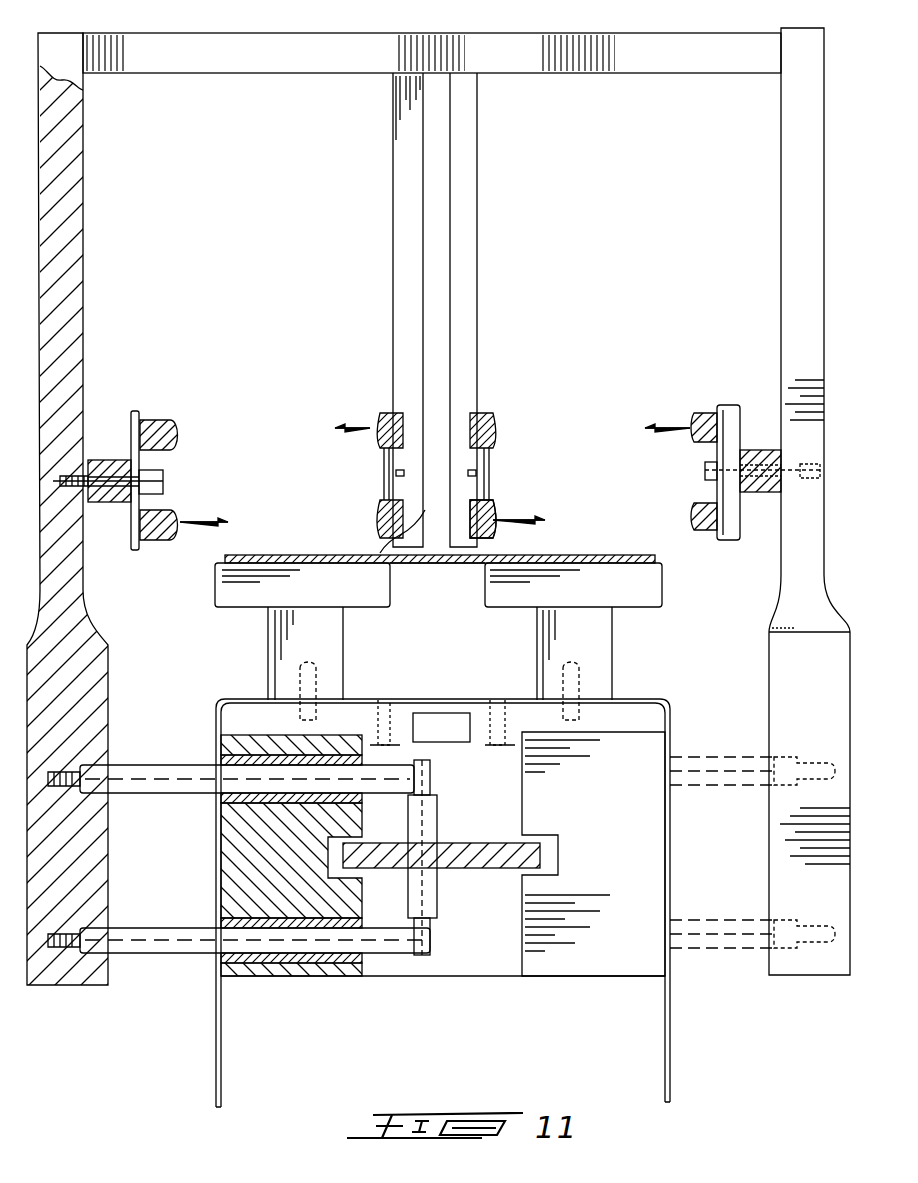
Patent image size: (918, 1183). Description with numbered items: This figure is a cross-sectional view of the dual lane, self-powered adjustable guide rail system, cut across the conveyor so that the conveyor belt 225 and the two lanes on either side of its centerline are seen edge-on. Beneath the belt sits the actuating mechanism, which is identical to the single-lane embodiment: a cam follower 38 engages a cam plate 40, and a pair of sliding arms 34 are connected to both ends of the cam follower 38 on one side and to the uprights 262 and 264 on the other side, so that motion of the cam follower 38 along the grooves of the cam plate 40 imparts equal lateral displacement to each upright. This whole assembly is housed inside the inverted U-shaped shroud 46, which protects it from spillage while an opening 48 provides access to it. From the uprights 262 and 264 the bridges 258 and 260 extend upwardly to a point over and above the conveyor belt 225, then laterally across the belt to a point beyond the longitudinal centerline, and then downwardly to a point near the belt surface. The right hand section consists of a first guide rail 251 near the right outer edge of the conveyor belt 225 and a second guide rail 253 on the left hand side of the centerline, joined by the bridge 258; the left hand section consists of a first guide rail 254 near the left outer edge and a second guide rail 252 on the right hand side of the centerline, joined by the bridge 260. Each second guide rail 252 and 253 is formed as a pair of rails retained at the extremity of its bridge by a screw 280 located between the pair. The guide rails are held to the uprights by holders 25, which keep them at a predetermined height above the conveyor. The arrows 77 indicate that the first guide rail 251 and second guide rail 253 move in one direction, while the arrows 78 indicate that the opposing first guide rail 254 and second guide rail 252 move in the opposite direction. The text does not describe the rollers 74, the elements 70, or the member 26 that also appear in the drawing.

The bridge 258 is at (150, 55).
The bridge 260 is at (803, 128).
The upright 262 is at (95, 683).
The upright 264 is at (782, 676).
The holder 25 is at (103, 462).
The guide roller 74 is at (160, 422).
The first guide rail 251 is at (178, 425).
The second guide rail 252 is at (384, 418).
The second guide rail 253 is at (487, 418).
The first guide rail 254 is at (700, 447).
The rail roller 70 is at (491, 426).
The arrow 78 is at (360, 428).
The arrow 77 is at (200, 522).
The screw 280 is at (452, 530).
The conveyor belt 225 is at (312, 555).
The support pillar 26 is at (538, 645).
The sliding arm 34 is at (152, 764).
The cam follower 38 is at (432, 818).
The cam plate 40 is at (485, 868).
The shroud 46 is at (218, 1037).
The opening 48 is at (440, 1064).